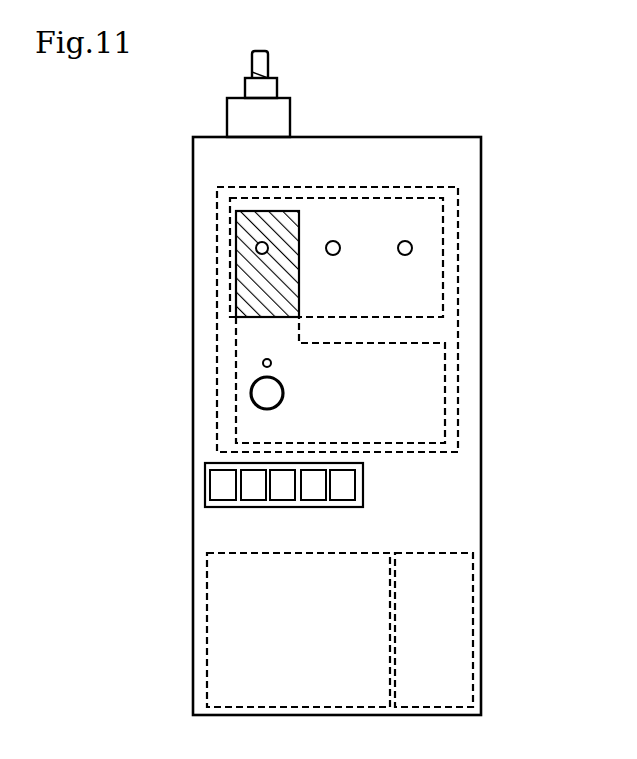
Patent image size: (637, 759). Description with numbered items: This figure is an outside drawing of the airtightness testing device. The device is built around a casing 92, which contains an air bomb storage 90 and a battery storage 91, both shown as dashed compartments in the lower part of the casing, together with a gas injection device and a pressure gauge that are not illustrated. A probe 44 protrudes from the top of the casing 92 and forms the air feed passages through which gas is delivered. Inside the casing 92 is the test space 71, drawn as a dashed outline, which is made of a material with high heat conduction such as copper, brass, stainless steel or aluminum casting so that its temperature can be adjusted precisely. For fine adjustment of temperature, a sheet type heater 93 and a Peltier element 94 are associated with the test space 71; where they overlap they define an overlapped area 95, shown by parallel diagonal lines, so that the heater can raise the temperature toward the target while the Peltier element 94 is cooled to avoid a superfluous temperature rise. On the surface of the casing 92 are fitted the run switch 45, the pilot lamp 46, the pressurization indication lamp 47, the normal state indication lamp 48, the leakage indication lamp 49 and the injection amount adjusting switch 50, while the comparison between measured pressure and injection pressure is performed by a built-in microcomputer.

The probe 44 is at (276, 73).
The run switch 45 is at (283, 401).
The pilot lamp 46 is at (271, 362).
The pressurization indication lamp 47 is at (256, 246).
The normal state indication lamp 48 is at (333, 255).
The leakage indication lamp 49 is at (405, 255).
The injection amount adjusting switch 50 is at (363, 483).
The test space 71 is at (456, 329).
The air bomb storage 90 is at (457, 652).
The battery storage 91 is at (213, 648).
The casing 92 is at (481, 493).
The sheet type heater 93 is at (447, 395).
The Peltier element 94 is at (443, 230).
The overlapped area 95 is at (253, 287).